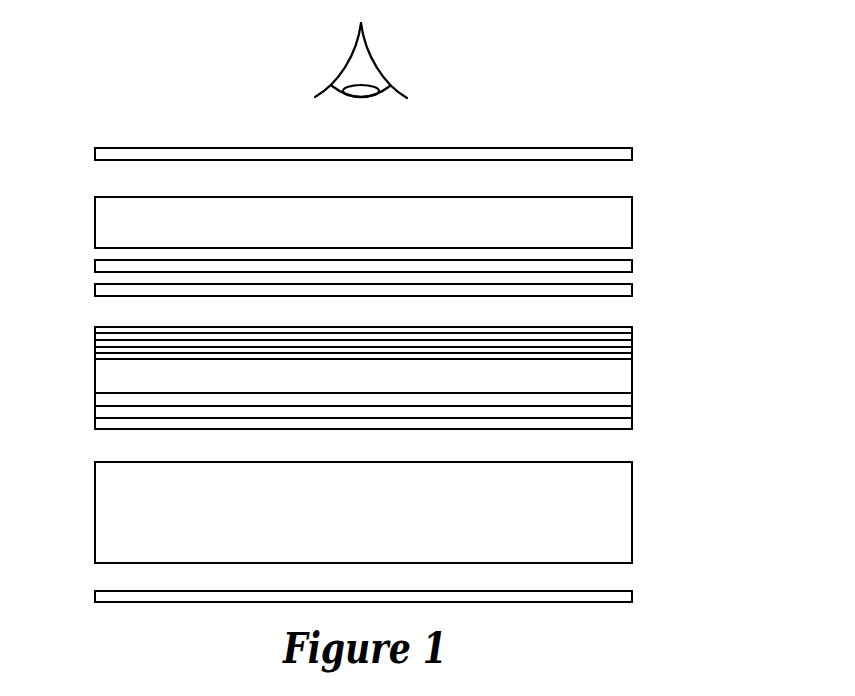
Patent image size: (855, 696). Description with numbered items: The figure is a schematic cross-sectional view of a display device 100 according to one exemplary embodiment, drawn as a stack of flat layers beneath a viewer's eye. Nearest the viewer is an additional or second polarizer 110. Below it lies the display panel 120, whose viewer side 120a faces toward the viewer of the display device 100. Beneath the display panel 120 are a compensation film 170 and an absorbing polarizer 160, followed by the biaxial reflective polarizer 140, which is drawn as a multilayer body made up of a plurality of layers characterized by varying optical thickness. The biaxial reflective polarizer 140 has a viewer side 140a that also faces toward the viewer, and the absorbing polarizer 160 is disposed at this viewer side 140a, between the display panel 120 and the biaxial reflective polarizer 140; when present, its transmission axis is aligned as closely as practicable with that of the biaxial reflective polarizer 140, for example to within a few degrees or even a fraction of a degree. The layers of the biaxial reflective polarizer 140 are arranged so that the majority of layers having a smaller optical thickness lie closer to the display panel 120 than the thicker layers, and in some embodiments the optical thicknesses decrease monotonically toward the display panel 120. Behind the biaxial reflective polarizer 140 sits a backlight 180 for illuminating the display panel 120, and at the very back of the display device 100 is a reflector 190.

The display device 100 is at (540, 84).
The second polarizer 110 is at (632, 153).
The display panel 120 is at (632, 222).
The viewer side of display panel 120a is at (605, 197).
The compensation film 170 is at (632, 266).
The absorbing polarizer 160 is at (632, 289).
The biaxial reflective polarizer 140 is at (95, 377).
The viewer side of biaxial reflective polarizer 140a is at (112, 327).
The backlight 180 is at (632, 508).
The reflector 190 is at (632, 596).